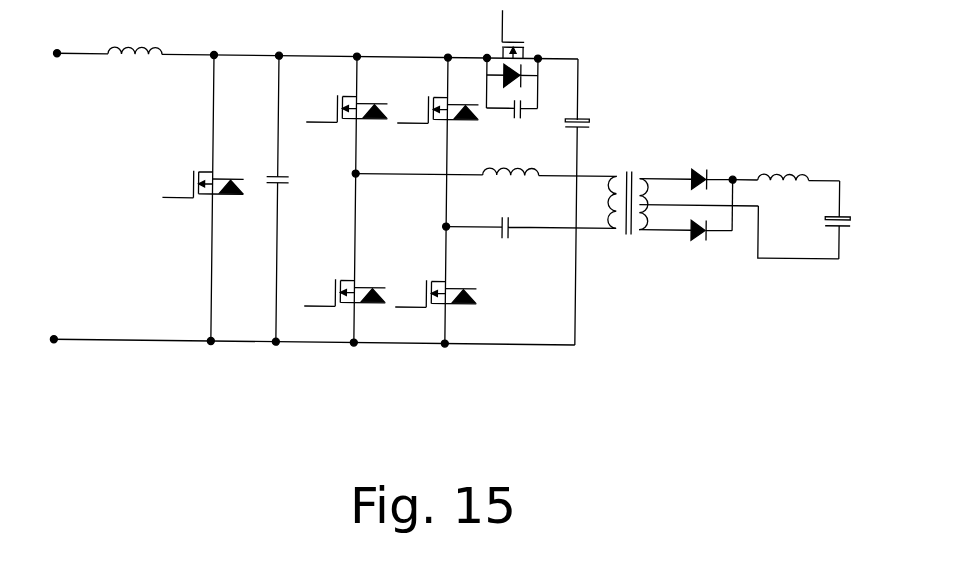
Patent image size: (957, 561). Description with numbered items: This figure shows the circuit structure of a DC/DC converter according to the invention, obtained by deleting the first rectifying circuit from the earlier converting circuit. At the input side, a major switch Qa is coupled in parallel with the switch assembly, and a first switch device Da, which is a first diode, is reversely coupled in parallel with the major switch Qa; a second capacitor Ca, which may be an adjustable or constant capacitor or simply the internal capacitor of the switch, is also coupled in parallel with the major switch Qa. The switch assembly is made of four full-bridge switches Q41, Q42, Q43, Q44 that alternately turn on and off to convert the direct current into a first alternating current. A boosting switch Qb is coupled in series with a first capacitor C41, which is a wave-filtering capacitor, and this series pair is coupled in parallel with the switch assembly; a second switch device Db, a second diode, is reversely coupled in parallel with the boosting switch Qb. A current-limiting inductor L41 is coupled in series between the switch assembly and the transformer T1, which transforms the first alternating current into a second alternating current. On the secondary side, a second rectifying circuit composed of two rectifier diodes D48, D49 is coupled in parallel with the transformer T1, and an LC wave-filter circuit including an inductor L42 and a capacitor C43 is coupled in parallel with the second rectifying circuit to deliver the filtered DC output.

The major switch Qa is at (187, 184).
The first switch device Da is at (227, 173).
The second capacitor Ca is at (284, 170).
The full-bridge switch Q41 is at (345, 109).
The full-bridge switch Q42 is at (436, 110).
The full-bridge switch Q43 is at (342, 293).
The full-bridge switch Q44 is at (434, 294).
The boosting switch Qb is at (514, 34).
The second switch device Db is at (526, 76).
The first capacitor C41 is at (592, 116).
The current-limiting inductor L41 is at (486, 163).
The transformer T1 is at (683, 196).
The rectifier diode D48 is at (710, 169).
The rectifier diode D49 is at (709, 242).
The inductor L42 is at (786, 168).
The capacitor C43 is at (853, 220).